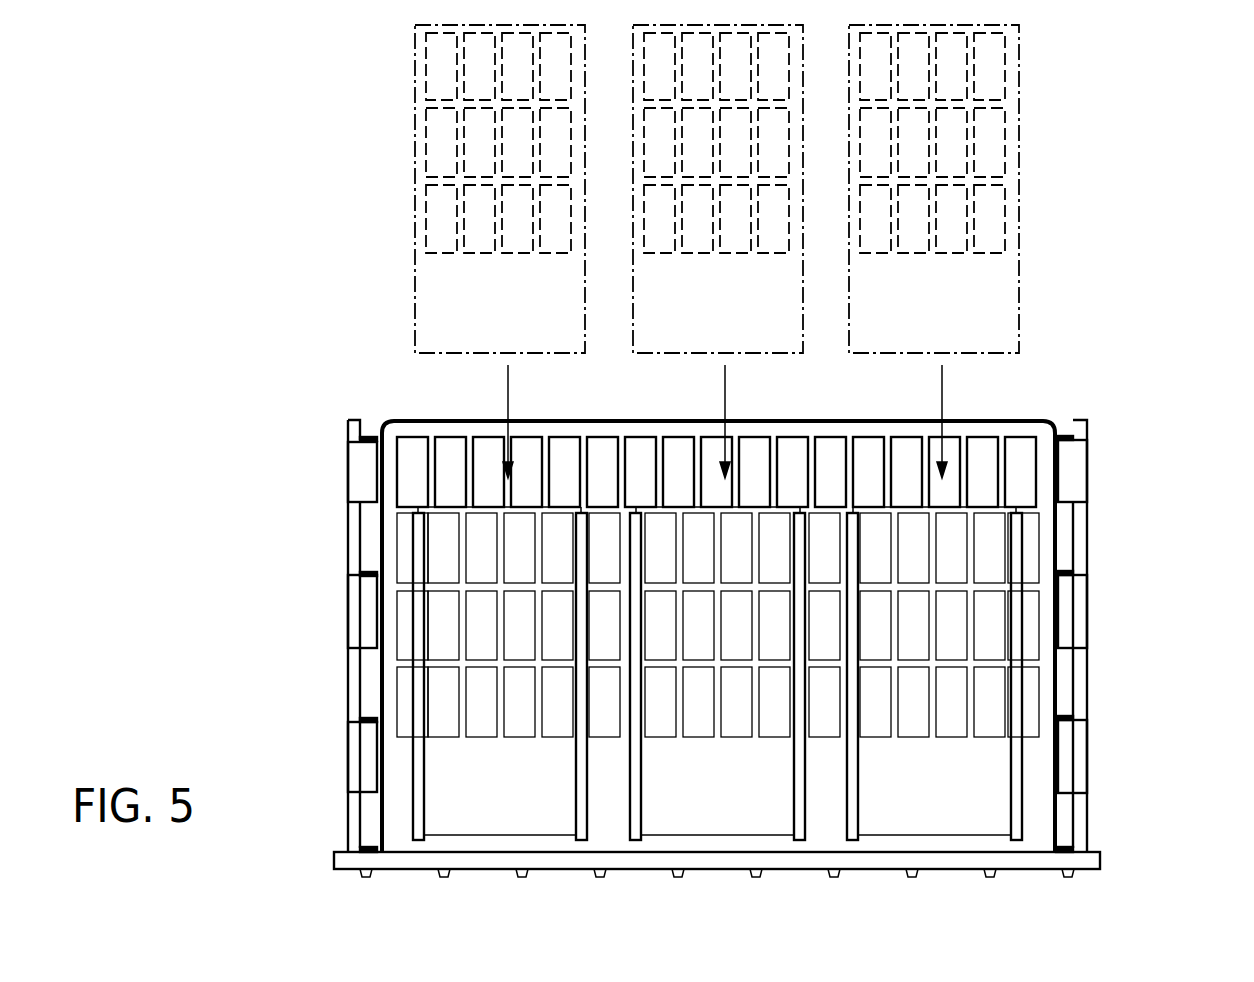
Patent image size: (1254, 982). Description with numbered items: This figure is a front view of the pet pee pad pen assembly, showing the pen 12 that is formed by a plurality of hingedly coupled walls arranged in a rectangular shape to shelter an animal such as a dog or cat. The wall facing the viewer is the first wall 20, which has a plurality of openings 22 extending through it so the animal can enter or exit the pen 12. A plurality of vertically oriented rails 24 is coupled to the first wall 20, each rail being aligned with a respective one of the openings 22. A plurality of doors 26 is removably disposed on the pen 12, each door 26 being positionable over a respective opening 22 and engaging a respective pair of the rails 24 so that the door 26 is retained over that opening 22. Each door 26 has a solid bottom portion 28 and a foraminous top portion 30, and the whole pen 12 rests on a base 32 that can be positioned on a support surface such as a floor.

The pen 12 is at (1110, 457).
The first wall 20 is at (1018, 420).
The openings 22 is at (548, 836).
The rails 24 is at (420, 822).
The doors 26 is at (463, 808).
The bottom portion 28 is at (968, 768).
The top portion 30 is at (975, 640).
The base 32 is at (1102, 857).